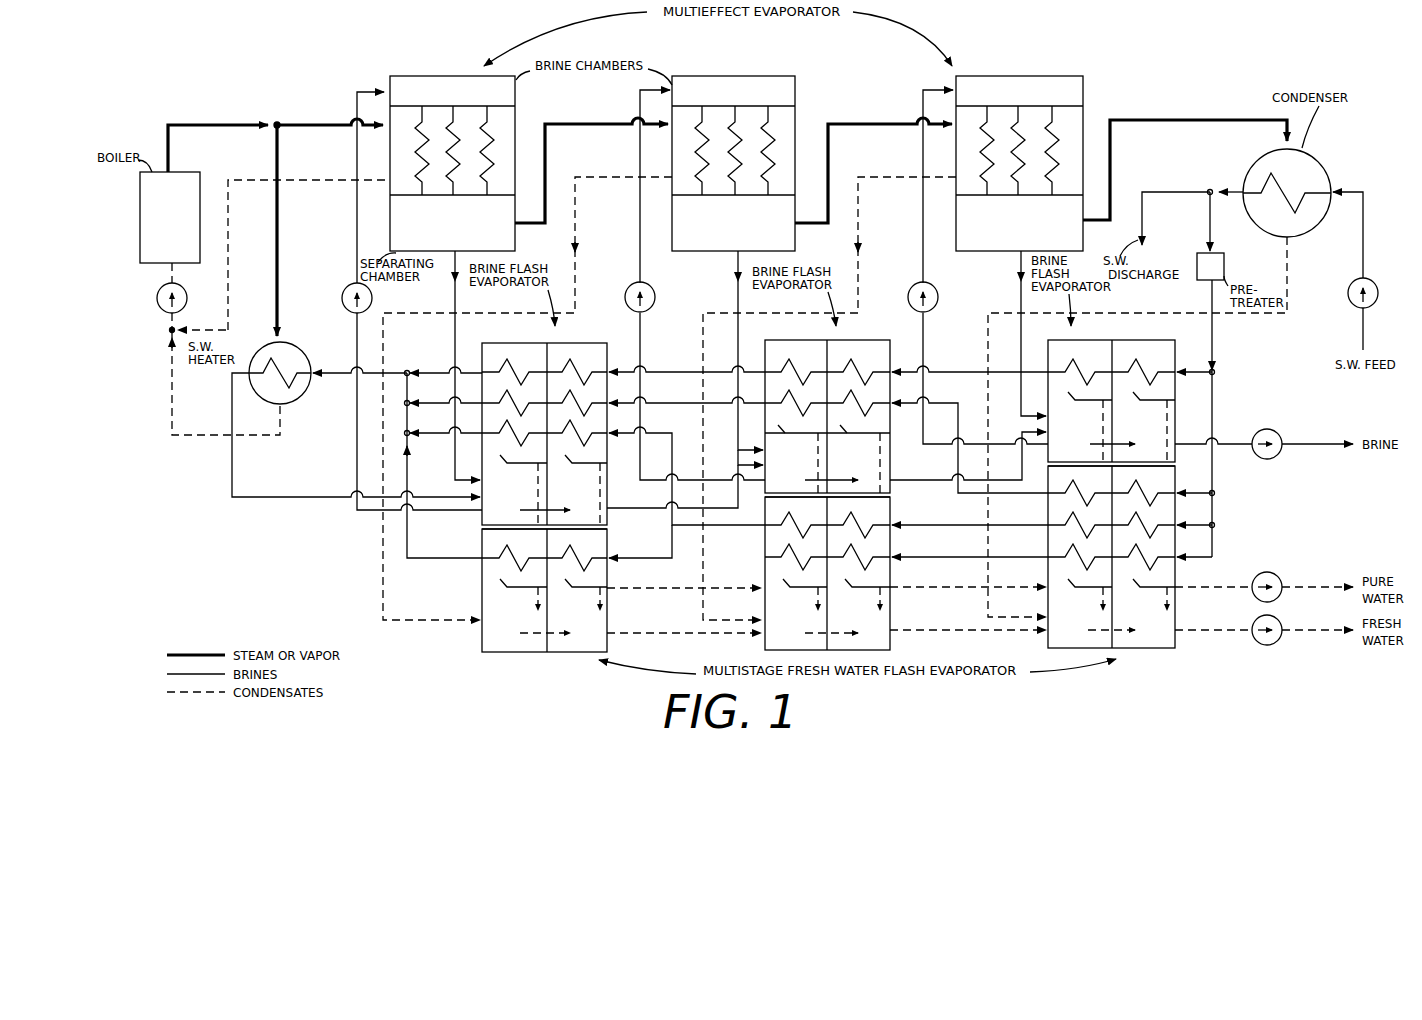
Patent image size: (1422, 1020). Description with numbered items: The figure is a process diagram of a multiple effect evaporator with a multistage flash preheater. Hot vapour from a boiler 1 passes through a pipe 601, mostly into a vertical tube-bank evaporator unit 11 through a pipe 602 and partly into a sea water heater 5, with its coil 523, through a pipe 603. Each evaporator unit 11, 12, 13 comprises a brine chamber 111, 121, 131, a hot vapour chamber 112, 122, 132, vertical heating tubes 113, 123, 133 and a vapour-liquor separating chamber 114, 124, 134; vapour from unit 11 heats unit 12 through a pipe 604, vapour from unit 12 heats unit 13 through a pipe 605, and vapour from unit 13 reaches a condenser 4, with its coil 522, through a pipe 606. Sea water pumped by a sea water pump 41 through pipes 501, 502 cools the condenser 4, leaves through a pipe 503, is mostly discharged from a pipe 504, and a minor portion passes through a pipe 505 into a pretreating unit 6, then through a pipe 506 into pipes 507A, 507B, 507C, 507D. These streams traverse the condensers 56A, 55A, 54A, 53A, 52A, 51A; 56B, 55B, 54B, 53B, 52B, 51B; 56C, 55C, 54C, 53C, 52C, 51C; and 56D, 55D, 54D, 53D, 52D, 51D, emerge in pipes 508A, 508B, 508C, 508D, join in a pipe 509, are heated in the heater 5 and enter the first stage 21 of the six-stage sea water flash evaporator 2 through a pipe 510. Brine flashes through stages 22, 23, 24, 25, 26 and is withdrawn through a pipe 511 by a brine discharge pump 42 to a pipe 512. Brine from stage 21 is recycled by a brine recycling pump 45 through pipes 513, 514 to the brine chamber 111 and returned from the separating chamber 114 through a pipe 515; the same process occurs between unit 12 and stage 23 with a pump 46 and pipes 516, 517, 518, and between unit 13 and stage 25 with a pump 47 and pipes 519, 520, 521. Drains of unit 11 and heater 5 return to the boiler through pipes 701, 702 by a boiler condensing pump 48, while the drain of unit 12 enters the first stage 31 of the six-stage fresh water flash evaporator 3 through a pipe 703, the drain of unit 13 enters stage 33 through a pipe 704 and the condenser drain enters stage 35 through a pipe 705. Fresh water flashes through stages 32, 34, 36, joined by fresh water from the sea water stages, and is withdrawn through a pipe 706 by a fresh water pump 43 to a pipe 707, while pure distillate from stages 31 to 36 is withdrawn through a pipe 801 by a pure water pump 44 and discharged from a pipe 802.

The boiler 1 is at (170, 217).
The six-stage flash evaporator 2 is at (549, 412).
The six-stage fresh water flash evaporator 3 is at (555, 603).
The condenser 4 is at (1295, 182).
The sea water heater 5 is at (291, 358).
The sea water pretreating unit 6 is at (1210, 266).
The evaporator unit 11 is at (452, 145).
The evaporator unit 12 is at (733, 145).
The evaporator unit 13 is at (1019, 145).
The first stage 21 is at (523, 490).
The stage 22 is at (563, 490).
The stage 23 is at (798, 459).
The stage 24 is at (925, 459).
The stage 25 is at (1090, 427).
The stage 26 is at (1132, 427).
The first stage 31 is at (523, 603).
The stage 32 is at (563, 606).
The stage 33 is at (805, 603).
The stage 34 is at (847, 606).
The stage 35 is at (1090, 602).
The stage 36 is at (1131, 604).
The sea water pump 41 is at (1348, 293).
The brine discharge pump 42 is at (1272, 432).
The fresh water pump 43 is at (1270, 647).
The pure water pump 44 is at (1282, 594).
The brine recycling pump 45 is at (342, 296).
The brine recirculation pump 46 is at (626, 292).
The brine recirculation pump 47 is at (908, 296).
The boiler condensing pump 48 is at (157, 302).
The condenser 51A is at (512, 366).
The condenser 51B is at (518, 408).
The condenser 51C is at (518, 440).
The condenser 51D is at (498, 555).
The condenser 52A is at (582, 366).
The condenser 52B is at (586, 408).
The condenser 52C is at (586, 440).
The condenser 52D is at (596, 556).
The condenser 53A is at (794, 366).
The condenser 53B is at (801, 408).
The condenser 53C is at (775, 527).
The condenser 53D is at (782, 554).
The condenser 54A is at (862, 366).
The condenser 54B is at (868, 408).
The condenser 54C is at (883, 529).
The condenser 54D is at (883, 562).
The condenser 55A is at (1077, 366).
The condenser 55B is at (1058, 492).
The condenser 55C is at (1060, 527).
The condenser 55D is at (1060, 558).
The condenser 56A is at (1145, 366).
The condenser 56B is at (1152, 492).
The condenser 56C is at (1152, 525).
The condenser 56D is at (1152, 558).
The brine chamber 111 is at (452, 95).
The hot vapour chamber 112 is at (479, 150).
The vertical heating tubes 113 is at (422, 188).
The vapour-liquor separating chamber 114 is at (452, 214).
The brine chamber 121 is at (733, 95).
The hot vapour chamber 122 is at (760, 150).
The vertical heating tubes 123 is at (704, 188).
The vapour-liquor separating chamber 124 is at (733, 214).
The brine chamber 131 is at (1019, 94).
The hot vapour chamber 132 is at (1043, 150).
The vertical heating tubes 133 is at (988, 188).
The vapour-liquor separating chamber 134 is at (1019, 214).
The pipe 501 is at (1362, 332).
The pipe 502 is at (1362, 262).
The pipe 503 is at (1236, 186).
The pipe 504 is at (1181, 190).
The pipe 505 is at (1208, 230).
The pipe 506 is at (1219, 342).
The pipe 507A is at (1216, 373).
The pipe 507B is at (1216, 492).
The pipe 507C is at (1216, 523).
The pipe 507D is at (1216, 555).
The pipe 508A is at (428, 366).
The pipe 508B is at (430, 402).
The pipe 508C is at (430, 432).
The pipe 508D is at (438, 562).
The pipe 509 is at (339, 386).
The pipe 510 is at (294, 508).
The pipe 511 is at (1232, 440).
The pipe 512 is at (1310, 447).
The pipe 513 is at (349, 442).
The pipe 514 is at (357, 234).
The pipe 515 is at (451, 304).
The brine recirculation line 516 is at (642, 348).
The brine feed line 517 is at (638, 232).
The brine line from separating chamber 518 is at (737, 302).
The brine recirculation line 519 is at (925, 346).
The brine feed line 520 is at (923, 234).
The brine line from separating chamber 521 is at (1016, 300).
The condenser coil 522 is at (1335, 146).
The heater coil 523 is at (300, 354).
The pipe 601 is at (217, 125).
The pipe 602 is at (315, 125).
The pipe 603 is at (266, 282).
The pipe 604 is at (589, 124).
The pipe 605 is at (869, 124).
The pipe 606 is at (1169, 120).
The pipe 701 is at (315, 178).
The pipe 702 is at (189, 448).
The pipe 703 is at (582, 176).
The pipe 704 is at (872, 176).
The pipe 705 is at (1159, 313).
The pipe 706 is at (1203, 636).
The pipe 707 is at (1315, 634).
The pipe 801 is at (1204, 588).
The pipe 802 is at (1328, 580).